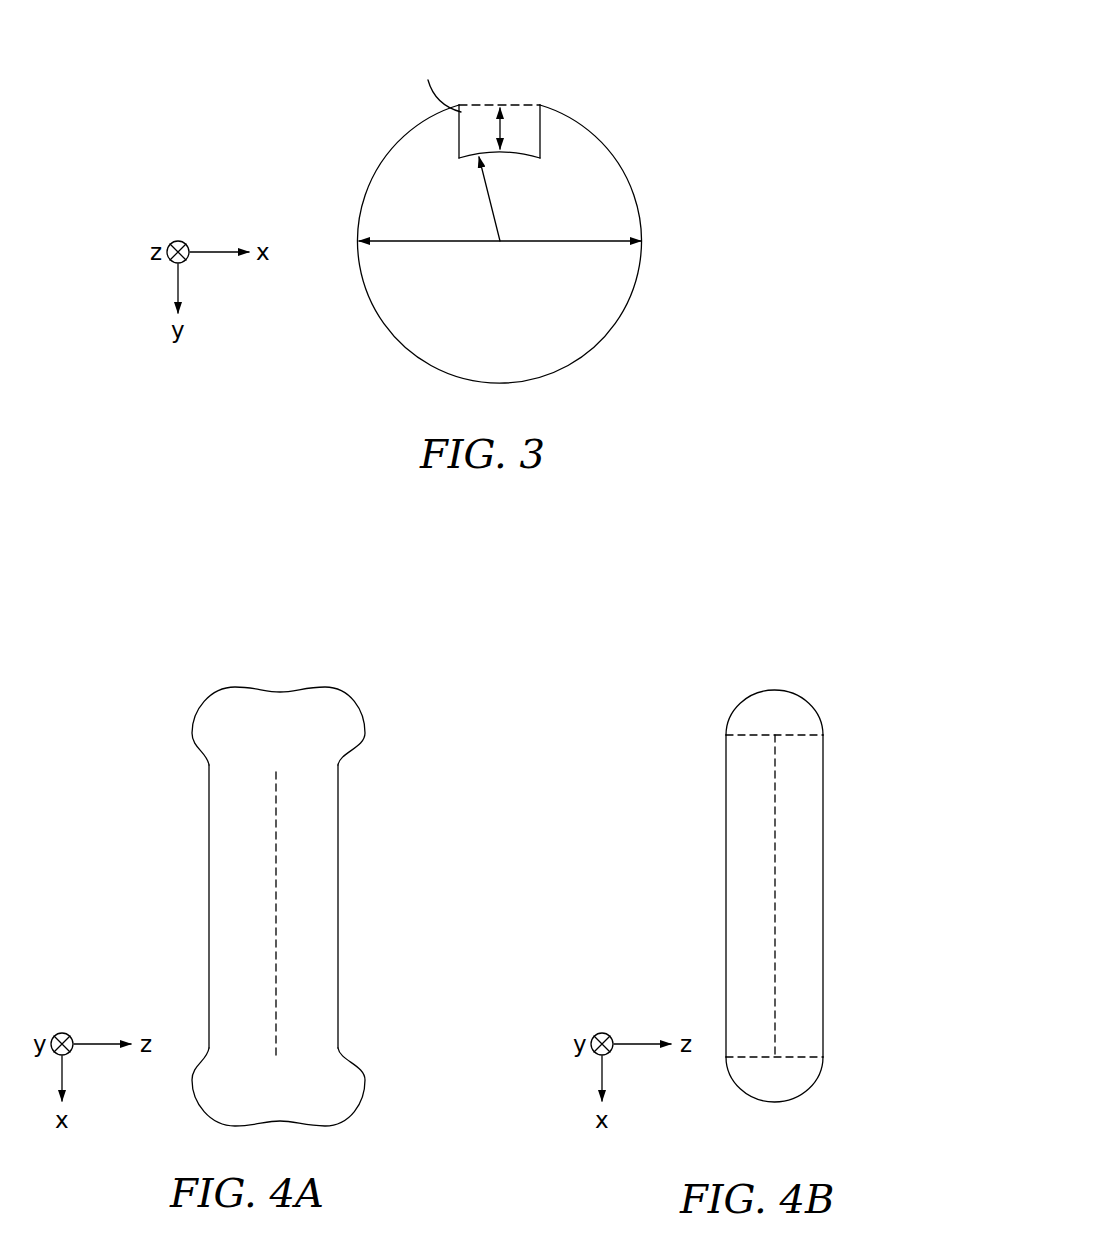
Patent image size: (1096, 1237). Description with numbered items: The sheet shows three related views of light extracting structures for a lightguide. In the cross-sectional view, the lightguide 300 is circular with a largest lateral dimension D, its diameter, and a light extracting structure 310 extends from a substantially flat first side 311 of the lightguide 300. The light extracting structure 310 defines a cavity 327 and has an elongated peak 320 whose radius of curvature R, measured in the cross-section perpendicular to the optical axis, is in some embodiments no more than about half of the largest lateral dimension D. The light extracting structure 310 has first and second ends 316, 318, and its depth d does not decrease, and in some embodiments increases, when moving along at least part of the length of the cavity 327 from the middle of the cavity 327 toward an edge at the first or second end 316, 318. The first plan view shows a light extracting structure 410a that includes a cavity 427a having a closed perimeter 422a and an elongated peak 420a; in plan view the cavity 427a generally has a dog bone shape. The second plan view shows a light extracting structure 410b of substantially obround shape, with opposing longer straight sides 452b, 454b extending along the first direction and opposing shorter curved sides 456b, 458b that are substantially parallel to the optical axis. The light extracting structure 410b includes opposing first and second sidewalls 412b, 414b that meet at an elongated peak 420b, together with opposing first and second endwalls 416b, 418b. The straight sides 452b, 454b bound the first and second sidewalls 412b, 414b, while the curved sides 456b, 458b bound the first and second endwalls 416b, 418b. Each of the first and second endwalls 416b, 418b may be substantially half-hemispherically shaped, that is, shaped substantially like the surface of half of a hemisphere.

In FIG. 3, the lightguide 300 is at (448, 212).
In FIG. 3, the light extracting structure 310 is at (467, 110).
In FIG. 3, the first side 311 is at (478, 104).
In FIG. 3, the first end 316 is at (459, 137).
In FIG. 3, the second end 318 is at (542, 128).
In FIG. 3, the cavity 327 is at (472, 144).
In FIG. 3, the elongated peak 320 is at (515, 153).
In FIG. 4A, the light extracting structure 410a is at (252, 876).
In FIG. 4A, the closed perimeter 422a is at (209, 815).
In FIG. 4A, the cavity 427a is at (232, 930).
In FIG. 4A, the elongated peak 420a is at (277, 858).
In FIG. 4B, the light extracting structure 410b is at (772, 872).
In FIG. 4B, the curved side 456b is at (776, 690).
In FIG. 4B, the first endwall 416b is at (814, 664).
In FIG. 4B, the elongated peak 420b is at (776, 772).
In FIG. 4B, the straight side 454b is at (824, 858).
In FIG. 4B, the straight side 452b is at (726, 815).
In FIG. 4B, the first sidewall 412b is at (771, 896).
In FIG. 4B, the second sidewall 414b is at (875, 896).
In FIG. 4B, the second endwall 418b is at (815, 1103).
In FIG. 4B, the curved side 458b is at (772, 1103).